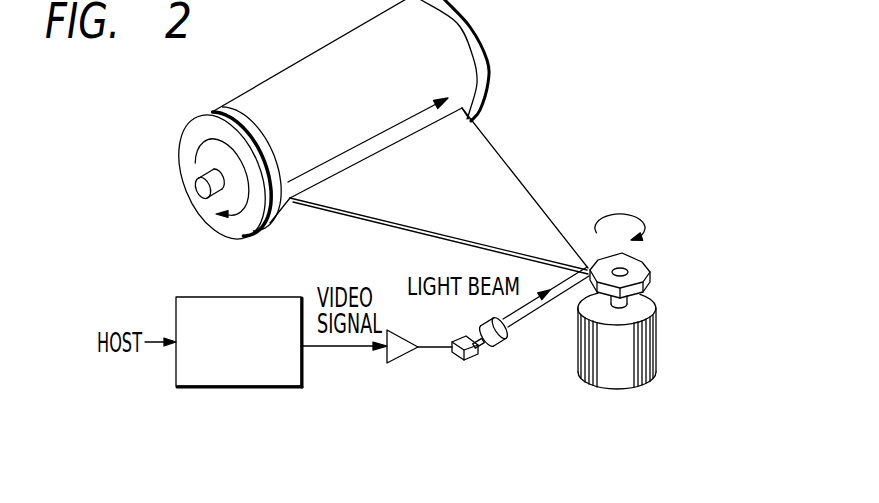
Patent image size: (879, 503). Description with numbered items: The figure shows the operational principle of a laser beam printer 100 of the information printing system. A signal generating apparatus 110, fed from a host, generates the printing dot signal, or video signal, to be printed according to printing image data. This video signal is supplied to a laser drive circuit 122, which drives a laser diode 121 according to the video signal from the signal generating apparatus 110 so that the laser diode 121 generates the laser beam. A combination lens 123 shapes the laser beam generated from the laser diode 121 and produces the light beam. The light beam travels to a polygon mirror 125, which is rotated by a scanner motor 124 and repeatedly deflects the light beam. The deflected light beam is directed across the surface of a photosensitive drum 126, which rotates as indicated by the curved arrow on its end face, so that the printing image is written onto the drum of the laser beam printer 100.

The laser beam printer 100 is at (500, 86).
The signal generating apparatus 110 is at (275, 388).
The laser diode 121 is at (460, 358).
The laser drive circuit 122 is at (405, 355).
The combination lens 123 is at (500, 336).
The scanner motor 124 is at (617, 382).
The polygon mirror 125 is at (640, 266).
The photosensitive drum 126 is at (188, 141).